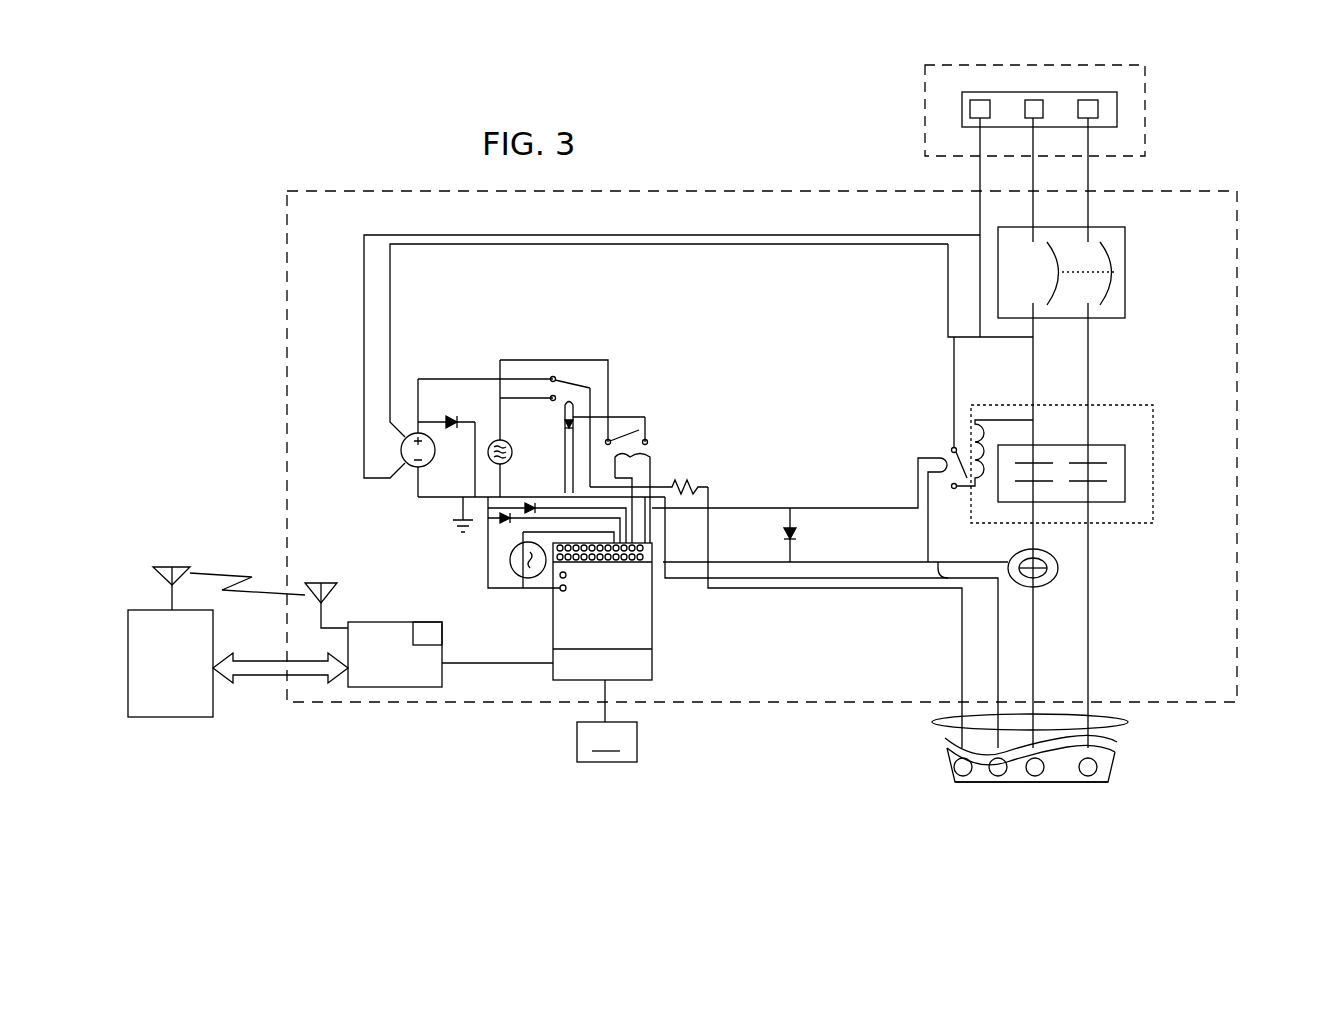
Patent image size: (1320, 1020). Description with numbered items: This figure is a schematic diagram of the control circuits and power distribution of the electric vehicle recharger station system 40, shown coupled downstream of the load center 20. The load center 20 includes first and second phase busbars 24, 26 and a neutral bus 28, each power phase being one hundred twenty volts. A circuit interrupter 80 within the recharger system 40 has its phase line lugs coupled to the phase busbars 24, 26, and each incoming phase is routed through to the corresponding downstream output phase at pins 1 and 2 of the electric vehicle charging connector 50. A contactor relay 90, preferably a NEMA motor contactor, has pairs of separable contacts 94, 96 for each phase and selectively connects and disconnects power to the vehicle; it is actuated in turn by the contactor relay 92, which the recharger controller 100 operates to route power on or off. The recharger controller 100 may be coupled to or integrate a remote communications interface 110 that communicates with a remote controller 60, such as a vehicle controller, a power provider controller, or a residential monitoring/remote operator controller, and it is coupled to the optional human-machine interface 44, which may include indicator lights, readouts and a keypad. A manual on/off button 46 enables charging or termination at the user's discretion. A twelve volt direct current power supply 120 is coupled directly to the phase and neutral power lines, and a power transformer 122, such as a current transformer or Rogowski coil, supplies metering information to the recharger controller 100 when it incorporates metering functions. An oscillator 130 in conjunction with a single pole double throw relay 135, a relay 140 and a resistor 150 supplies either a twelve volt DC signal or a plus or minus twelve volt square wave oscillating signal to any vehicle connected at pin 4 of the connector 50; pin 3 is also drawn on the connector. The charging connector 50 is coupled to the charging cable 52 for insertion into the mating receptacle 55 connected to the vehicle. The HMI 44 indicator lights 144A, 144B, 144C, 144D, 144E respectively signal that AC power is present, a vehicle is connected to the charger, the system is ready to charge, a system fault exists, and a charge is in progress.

The connector pin 1 is at (1092, 769).
The connector pin 2 is at (1037, 769).
The outlet 3 is at (997, 768).
The connector pin 4 is at (952, 765).
The load center 20 is at (1162, 122).
The first phase busbar 24 is at (1030, 103).
The second phase busbar 26 is at (1097, 110).
The neutral bus 28 is at (975, 118).
The electric vehicle recharger station system 40 is at (1252, 326).
The human-machine interface 44 is at (629, 742).
The manual on/off button 46 is at (526, 596).
The electric vehicle charging connector 50 is at (1112, 744).
The charging cable 52 is at (934, 722).
The mating receptacle 55 is at (1110, 760).
The remote controller 60 is at (191, 718).
The circuit interrupter 80 is at (1137, 242).
The contactor relay 90 is at (1167, 458).
The contactor relay 92 is at (947, 446).
The separable contacts 94 is at (1040, 456).
The separable contacts 96 is at (1097, 458).
The recharger controller 100 is at (656, 646).
The remote communications interface 110 is at (401, 691).
The 12 volt direct current power supply 120 is at (407, 477).
The power transformer 122 is at (1059, 568).
The oscillator 130 is at (493, 436).
The single pole double throw relay 135 is at (578, 377).
The relay 140 is at (658, 443).
The AC power present indicator light 144A is at (449, 413).
The vehicle connected indicator light 144B is at (577, 446).
The ready to charge indicator light 144C is at (498, 525).
The system fault indicator light 144D is at (521, 527).
The charge in progress indicator light 144E is at (802, 535).
The resistor 150 is at (700, 486).